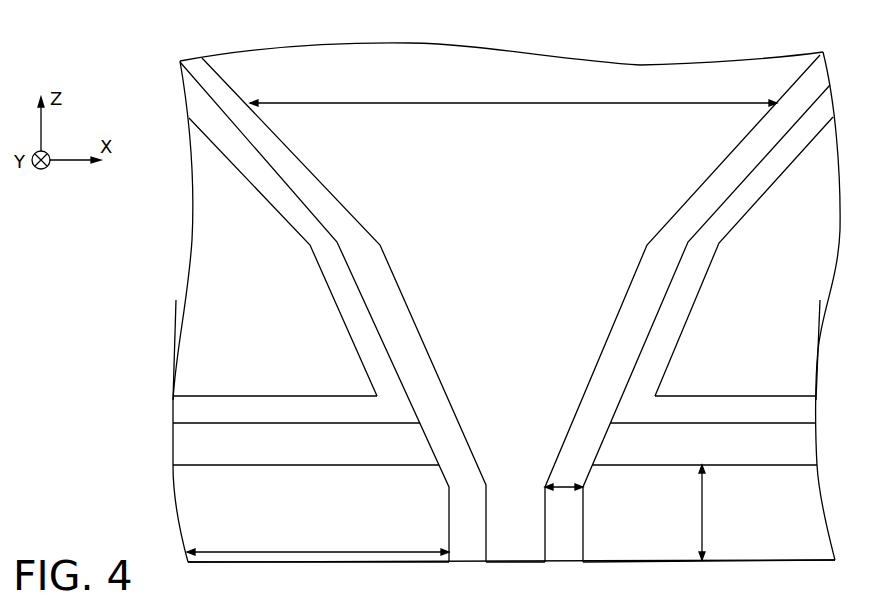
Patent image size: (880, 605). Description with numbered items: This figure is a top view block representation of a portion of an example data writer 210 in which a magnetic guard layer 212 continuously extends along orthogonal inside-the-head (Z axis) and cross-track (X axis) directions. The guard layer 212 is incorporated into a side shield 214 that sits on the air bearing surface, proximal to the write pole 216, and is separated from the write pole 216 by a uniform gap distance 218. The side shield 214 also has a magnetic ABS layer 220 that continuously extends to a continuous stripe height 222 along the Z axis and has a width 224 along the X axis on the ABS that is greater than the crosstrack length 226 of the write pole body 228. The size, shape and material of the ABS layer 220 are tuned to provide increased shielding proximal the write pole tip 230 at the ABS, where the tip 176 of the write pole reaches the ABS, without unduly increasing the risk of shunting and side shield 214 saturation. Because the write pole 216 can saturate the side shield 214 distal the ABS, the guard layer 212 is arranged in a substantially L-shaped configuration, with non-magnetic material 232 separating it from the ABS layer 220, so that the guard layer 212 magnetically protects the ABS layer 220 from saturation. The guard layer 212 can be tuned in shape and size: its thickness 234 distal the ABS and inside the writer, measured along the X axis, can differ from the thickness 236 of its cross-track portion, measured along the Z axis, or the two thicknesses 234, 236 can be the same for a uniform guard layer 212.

The data writer 210 is at (786, 50).
The write pole body 228 is at (446, 64).
The crosstrack length 226 is at (513, 113).
The write pole 216 is at (533, 291).
The side shield 214 is at (177, 328).
The thickness 234 is at (396, 328).
The non-magnetic material 232 is at (224, 390).
The magnetic guard layer 212 is at (224, 421).
The thickness 236 is at (326, 435).
The magnetic ABS layer 220 is at (224, 523).
The write pole tip 230 is at (535, 533).
The uniform gap distance 218 is at (564, 500).
The stripe height 222 is at (685, 512).
The width 224 is at (318, 542).
The tip 176 is at (563, 560).